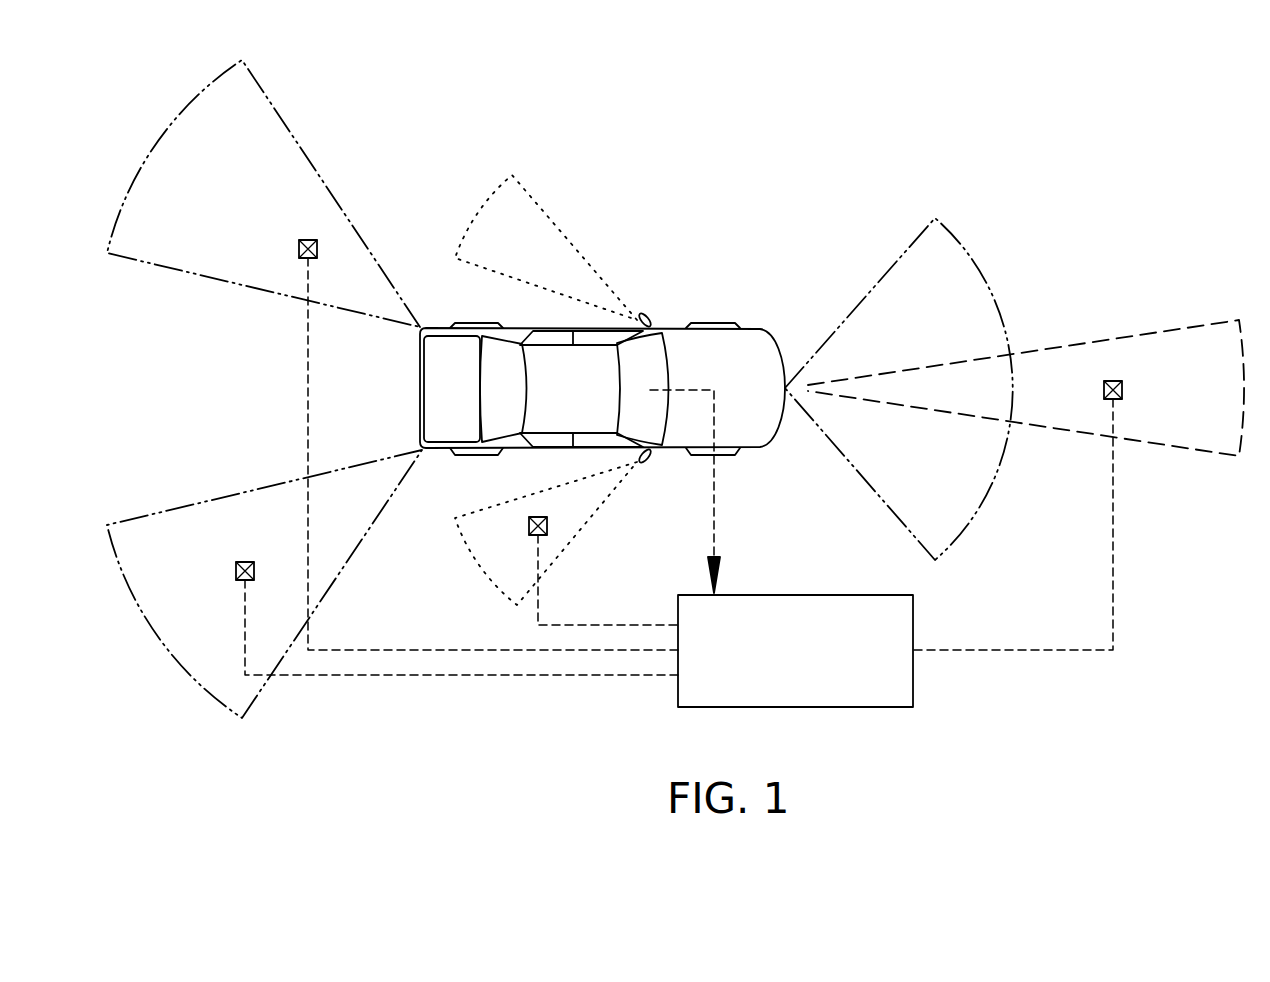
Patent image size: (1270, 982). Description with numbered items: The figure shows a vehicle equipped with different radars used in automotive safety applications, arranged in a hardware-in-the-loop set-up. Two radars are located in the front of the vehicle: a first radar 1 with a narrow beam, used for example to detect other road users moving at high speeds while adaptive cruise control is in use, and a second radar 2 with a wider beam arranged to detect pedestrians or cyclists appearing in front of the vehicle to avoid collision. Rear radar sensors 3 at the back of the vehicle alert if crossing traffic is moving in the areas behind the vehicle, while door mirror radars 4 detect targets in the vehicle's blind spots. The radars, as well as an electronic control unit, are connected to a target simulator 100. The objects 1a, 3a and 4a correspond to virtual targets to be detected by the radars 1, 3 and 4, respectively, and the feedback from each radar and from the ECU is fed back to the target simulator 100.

The first radar 1 is at (1173, 328).
The virtual target 1a is at (1113, 381).
The second radar 2 is at (862, 300).
The rear radar sensors 3 is at (353, 223).
The virtual target 3a is at (308, 240).
The door mirror radars 4 is at (592, 265).
The virtual target 4a is at (547, 527).
The target simulator 100 is at (913, 677).